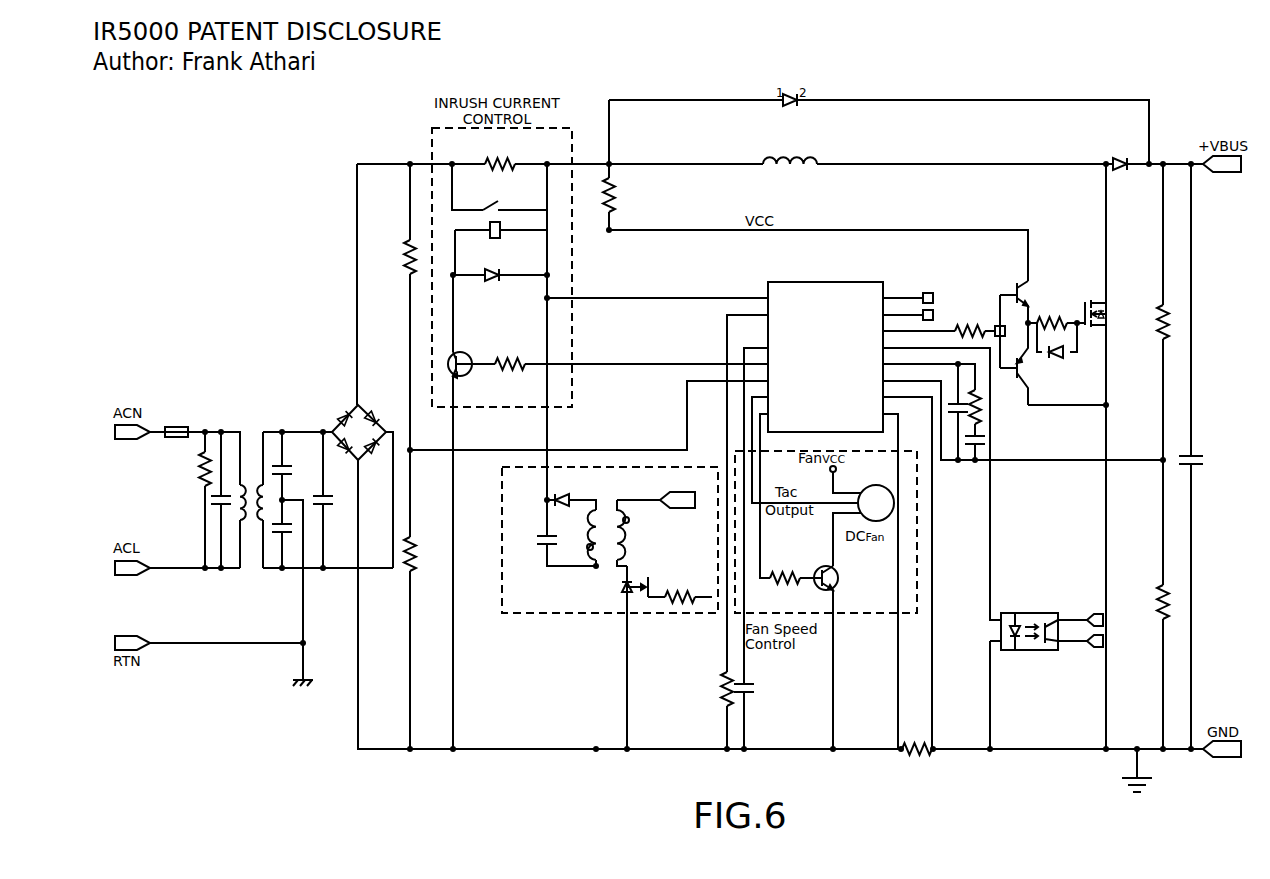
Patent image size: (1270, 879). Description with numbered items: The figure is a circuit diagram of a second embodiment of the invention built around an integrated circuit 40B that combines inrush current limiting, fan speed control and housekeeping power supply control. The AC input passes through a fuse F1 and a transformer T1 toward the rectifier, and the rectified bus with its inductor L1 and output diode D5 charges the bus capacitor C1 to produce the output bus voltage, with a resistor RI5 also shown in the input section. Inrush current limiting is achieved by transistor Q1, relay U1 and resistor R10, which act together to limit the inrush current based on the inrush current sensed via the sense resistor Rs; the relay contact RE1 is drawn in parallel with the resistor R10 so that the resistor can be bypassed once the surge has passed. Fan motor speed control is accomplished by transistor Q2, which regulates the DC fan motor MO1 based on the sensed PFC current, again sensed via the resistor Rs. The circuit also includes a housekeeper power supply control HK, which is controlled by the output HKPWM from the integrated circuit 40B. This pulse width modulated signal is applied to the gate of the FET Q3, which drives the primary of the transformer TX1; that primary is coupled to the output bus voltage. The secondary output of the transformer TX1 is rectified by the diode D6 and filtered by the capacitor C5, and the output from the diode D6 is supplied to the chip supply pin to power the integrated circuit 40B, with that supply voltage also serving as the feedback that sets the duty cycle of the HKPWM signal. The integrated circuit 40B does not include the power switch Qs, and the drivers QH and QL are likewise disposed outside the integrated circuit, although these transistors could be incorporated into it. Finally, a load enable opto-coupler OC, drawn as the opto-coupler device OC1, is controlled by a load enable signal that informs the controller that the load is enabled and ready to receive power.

The fuse F1 is at (175, 429).
The common-mode transformer T1 is at (251, 496).
The resistor 1K RI5 is at (424, 554).
The resistor R10 is at (498, 153).
The relay 1 N.O. RE1 is at (499, 187).
The relay U1 is at (501, 251).
The transistor Q1 is at (469, 358).
The inductor L1 is at (790, 149).
The output diode D5 is at (1124, 147).
The integrated circuit 40B is at (863, 282).
The driver QH is at (1038, 284).
The driver QL is at (1031, 390).
The power switch Qs is at (1082, 333).
The bus capacitor C1 is at (1198, 452).
The housekeeper power supply control HK is at (500, 584).
The diode D6 is at (571, 495).
The capacitor C5 is at (558, 539).
The transformer TX1 is at (643, 520).
The FET Q3 is at (646, 642).
The HK PWM output HKPWM is at (703, 607).
The DC fan motor MO1 is at (873, 492).
The transistor Q2 is at (834, 576).
The optocoupler OC1 is at (1025, 629).
The load enable opto-coupler OC is at (1038, 652).
The resistor Rs is at (917, 762).